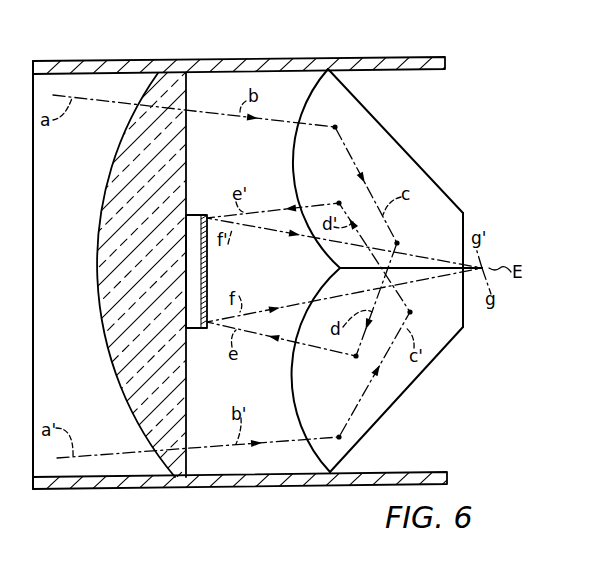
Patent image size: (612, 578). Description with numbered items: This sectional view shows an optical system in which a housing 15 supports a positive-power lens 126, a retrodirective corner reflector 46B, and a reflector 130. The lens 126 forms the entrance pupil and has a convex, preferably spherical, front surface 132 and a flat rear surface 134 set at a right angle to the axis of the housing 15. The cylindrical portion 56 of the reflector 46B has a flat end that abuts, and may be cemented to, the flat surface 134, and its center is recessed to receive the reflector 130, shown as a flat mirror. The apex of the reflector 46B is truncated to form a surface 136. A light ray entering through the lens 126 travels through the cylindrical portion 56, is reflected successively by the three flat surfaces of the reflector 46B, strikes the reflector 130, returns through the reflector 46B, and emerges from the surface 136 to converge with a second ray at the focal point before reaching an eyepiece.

The housing 15 is at (140, 60).
The cylindrical portion 56 is at (228, 82).
The lens 126 is at (116, 149).
The convex front surface 132 is at (104, 182).
The rear surface 134 is at (187, 176).
The reflector 130 is at (208, 270).
The retrodirective corner reflector 46B is at (400, 137).
The surface 136 is at (463, 223).